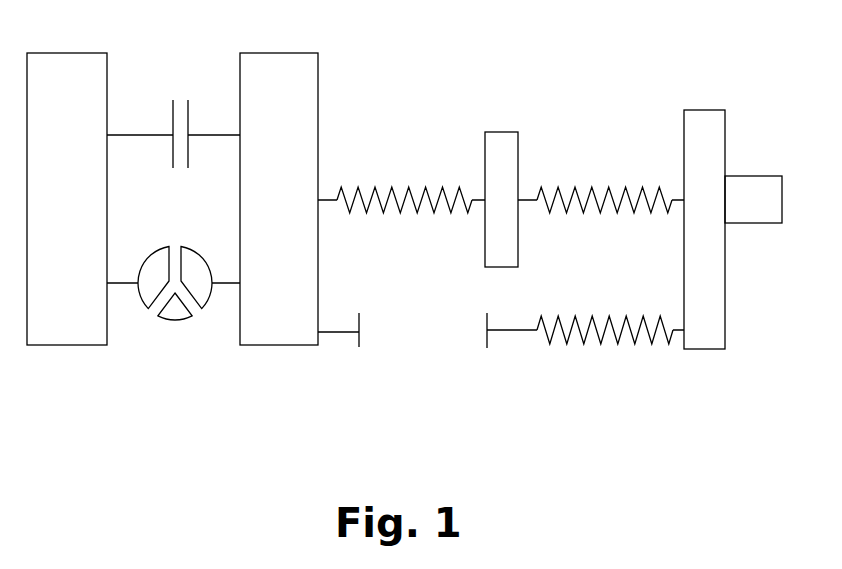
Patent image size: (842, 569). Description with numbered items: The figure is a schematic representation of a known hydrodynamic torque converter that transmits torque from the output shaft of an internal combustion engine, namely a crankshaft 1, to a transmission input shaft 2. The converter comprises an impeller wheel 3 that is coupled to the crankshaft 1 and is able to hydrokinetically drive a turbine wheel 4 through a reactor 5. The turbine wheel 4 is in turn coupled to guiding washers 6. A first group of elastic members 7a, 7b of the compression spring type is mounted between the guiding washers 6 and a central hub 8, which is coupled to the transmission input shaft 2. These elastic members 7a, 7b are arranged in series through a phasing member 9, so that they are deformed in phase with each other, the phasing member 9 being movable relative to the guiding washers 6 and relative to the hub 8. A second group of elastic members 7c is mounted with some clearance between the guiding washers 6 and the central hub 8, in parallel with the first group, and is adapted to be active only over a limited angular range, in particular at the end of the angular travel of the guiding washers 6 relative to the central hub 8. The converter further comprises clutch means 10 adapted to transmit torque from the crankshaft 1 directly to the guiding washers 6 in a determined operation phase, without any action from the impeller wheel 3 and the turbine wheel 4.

The crankshaft 1 is at (75, 325).
The transmission input shaft 2 is at (745, 195).
The impeller wheel 3 is at (145, 292).
The turbine wheel 4 is at (204, 292).
The reactor 5 is at (174, 305).
The guiding washers 6 is at (292, 92).
The elastic member 7a is at (410, 188).
The elastic member 7b is at (588, 185).
The elastic member 7c is at (608, 344).
The central hub 8 is at (698, 125).
The phasing member 9 is at (498, 144).
The clutch means 10 is at (181, 98).